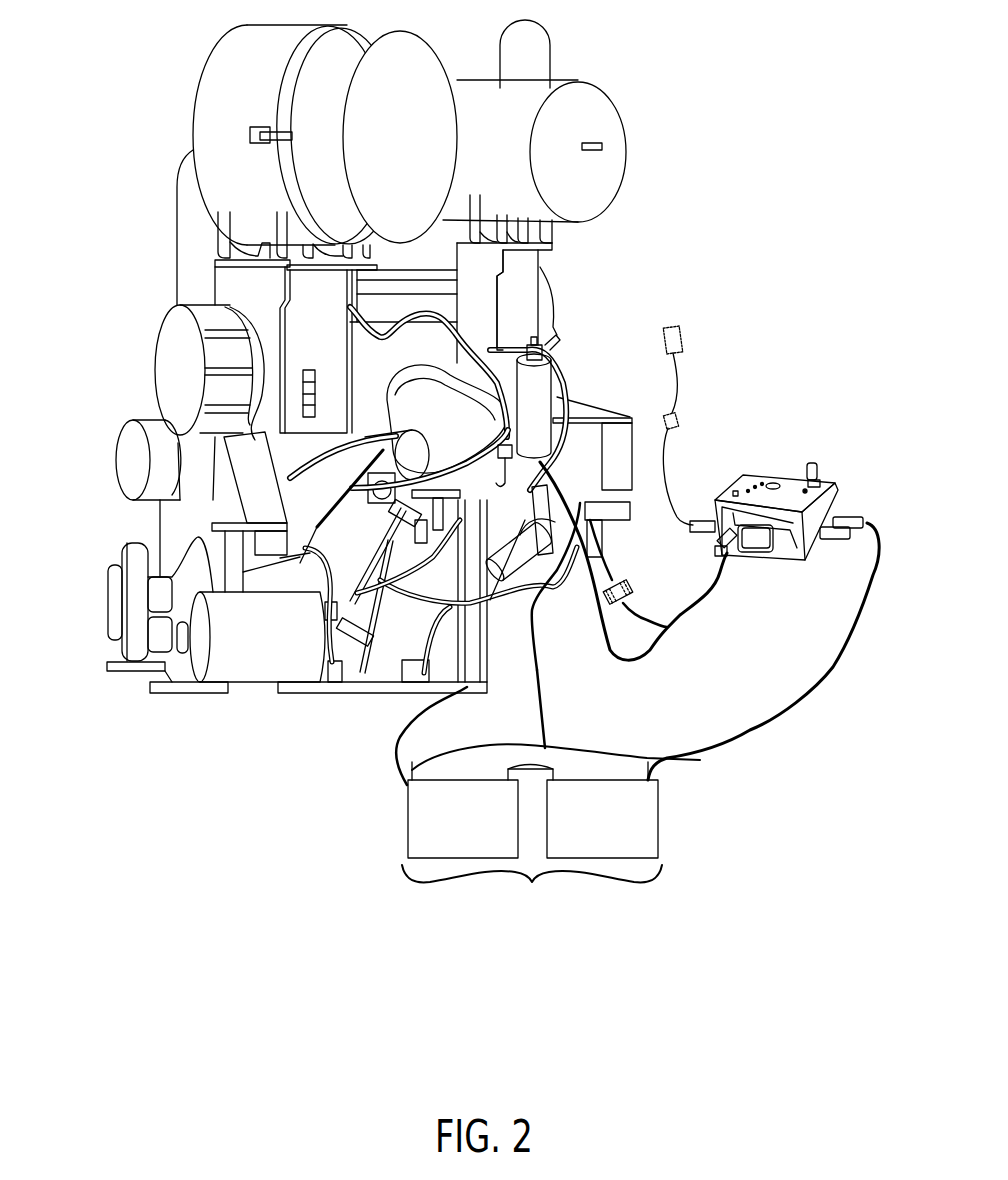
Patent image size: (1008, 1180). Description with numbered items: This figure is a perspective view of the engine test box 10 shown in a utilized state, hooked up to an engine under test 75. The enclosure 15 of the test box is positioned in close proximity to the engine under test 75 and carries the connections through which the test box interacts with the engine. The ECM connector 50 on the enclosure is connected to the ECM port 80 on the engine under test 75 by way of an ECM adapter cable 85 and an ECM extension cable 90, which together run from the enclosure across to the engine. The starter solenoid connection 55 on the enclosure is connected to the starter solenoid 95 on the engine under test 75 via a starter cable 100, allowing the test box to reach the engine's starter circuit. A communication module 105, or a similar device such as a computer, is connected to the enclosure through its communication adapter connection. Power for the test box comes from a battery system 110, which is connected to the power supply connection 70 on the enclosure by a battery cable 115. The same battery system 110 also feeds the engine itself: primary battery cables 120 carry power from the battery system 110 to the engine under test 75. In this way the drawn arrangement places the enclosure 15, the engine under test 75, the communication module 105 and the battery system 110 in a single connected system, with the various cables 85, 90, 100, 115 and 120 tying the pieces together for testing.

The test box 10 is at (237, 893).
The enclosure 15 is at (772, 482).
The ECM connector 50 is at (770, 552).
The starter solenoid connection 55 is at (735, 527).
The power supply connection 70 is at (500, 288).
The engine under test 75 is at (128, 725).
The ECM port 80 is at (547, 468).
The ECM adapter cable 85 is at (610, 567).
The ECM extension cable 90 is at (713, 615).
The starter solenoid 95 is at (542, 572).
The starter cable 100 is at (718, 555).
The communication module 105 is at (684, 327).
The battery system 110 is at (547, 893).
The battery cable 115 is at (792, 712).
The primary battery cables 120 is at (537, 688).